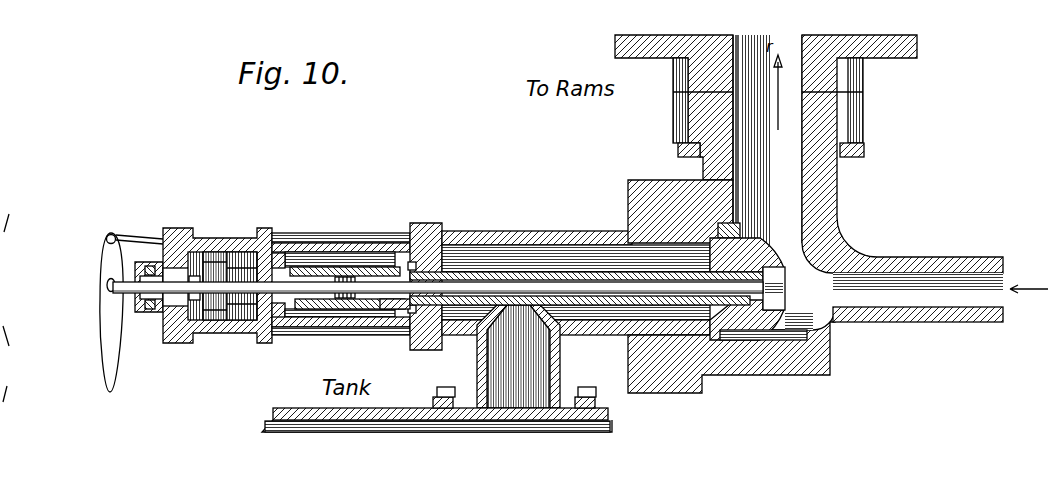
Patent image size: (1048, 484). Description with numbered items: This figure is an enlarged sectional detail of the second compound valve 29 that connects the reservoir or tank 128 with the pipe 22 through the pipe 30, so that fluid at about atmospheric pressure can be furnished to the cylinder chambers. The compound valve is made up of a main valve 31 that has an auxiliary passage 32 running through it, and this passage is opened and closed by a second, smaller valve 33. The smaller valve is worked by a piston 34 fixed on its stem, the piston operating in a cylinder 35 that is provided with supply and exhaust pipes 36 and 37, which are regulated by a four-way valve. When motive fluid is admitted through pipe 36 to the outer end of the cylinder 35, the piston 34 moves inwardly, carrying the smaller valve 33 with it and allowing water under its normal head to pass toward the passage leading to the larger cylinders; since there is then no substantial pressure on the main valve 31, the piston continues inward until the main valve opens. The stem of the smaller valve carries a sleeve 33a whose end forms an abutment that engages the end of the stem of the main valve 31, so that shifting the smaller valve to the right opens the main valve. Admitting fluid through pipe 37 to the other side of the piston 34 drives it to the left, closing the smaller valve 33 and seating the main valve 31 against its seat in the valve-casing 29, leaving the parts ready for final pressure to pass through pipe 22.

The pipe 22 is at (965, 322).
The second compound valve 29 is at (673, 201).
The pipe 30 is at (511, 236).
The main valve 31 is at (752, 250).
The auxiliary passage 32 is at (737, 340).
The second smaller valve 33 is at (775, 285).
The sleeve 33a is at (581, 272).
The piston 34 is at (215, 257).
The cylinder 35 is at (242, 257).
The supply and exhaust pipe 36 is at (200, 337).
The supply and exhaust pipe 37 is at (238, 337).
The reservoir or tank 128 is at (297, 410).